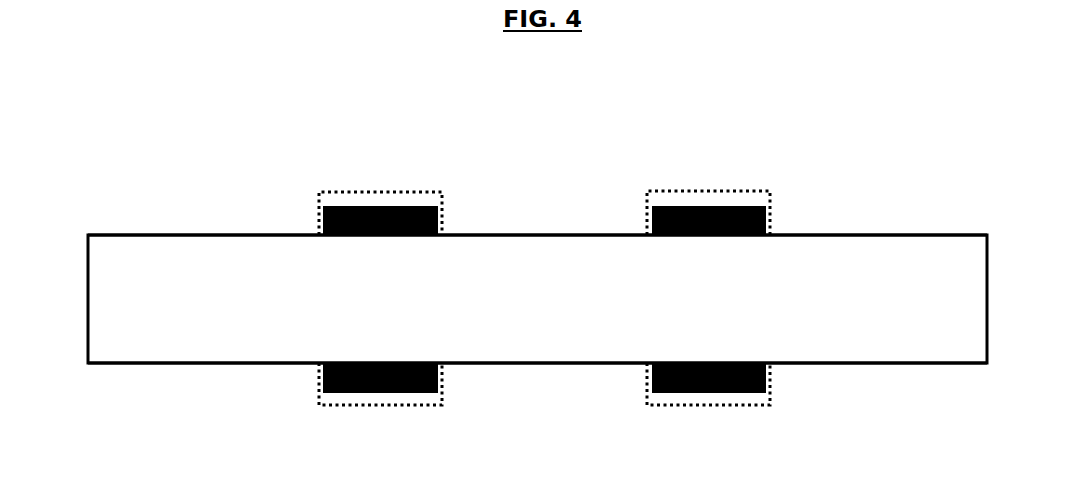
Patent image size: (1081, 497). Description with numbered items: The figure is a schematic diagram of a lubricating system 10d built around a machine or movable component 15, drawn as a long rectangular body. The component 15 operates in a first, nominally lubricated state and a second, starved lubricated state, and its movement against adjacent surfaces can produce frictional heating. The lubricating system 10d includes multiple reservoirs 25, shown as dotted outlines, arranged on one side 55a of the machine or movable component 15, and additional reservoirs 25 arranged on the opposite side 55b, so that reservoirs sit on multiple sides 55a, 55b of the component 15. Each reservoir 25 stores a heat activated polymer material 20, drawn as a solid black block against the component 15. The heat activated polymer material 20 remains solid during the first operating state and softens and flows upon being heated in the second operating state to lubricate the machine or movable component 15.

The lubricating system 10d is at (50, 199).
The machine or movable component 15 is at (988, 305).
The heat activated polymer material 20 is at (408, 206).
The reservoir 25 is at (428, 192).
The side 55a is at (933, 235).
The side 55b is at (932, 363).